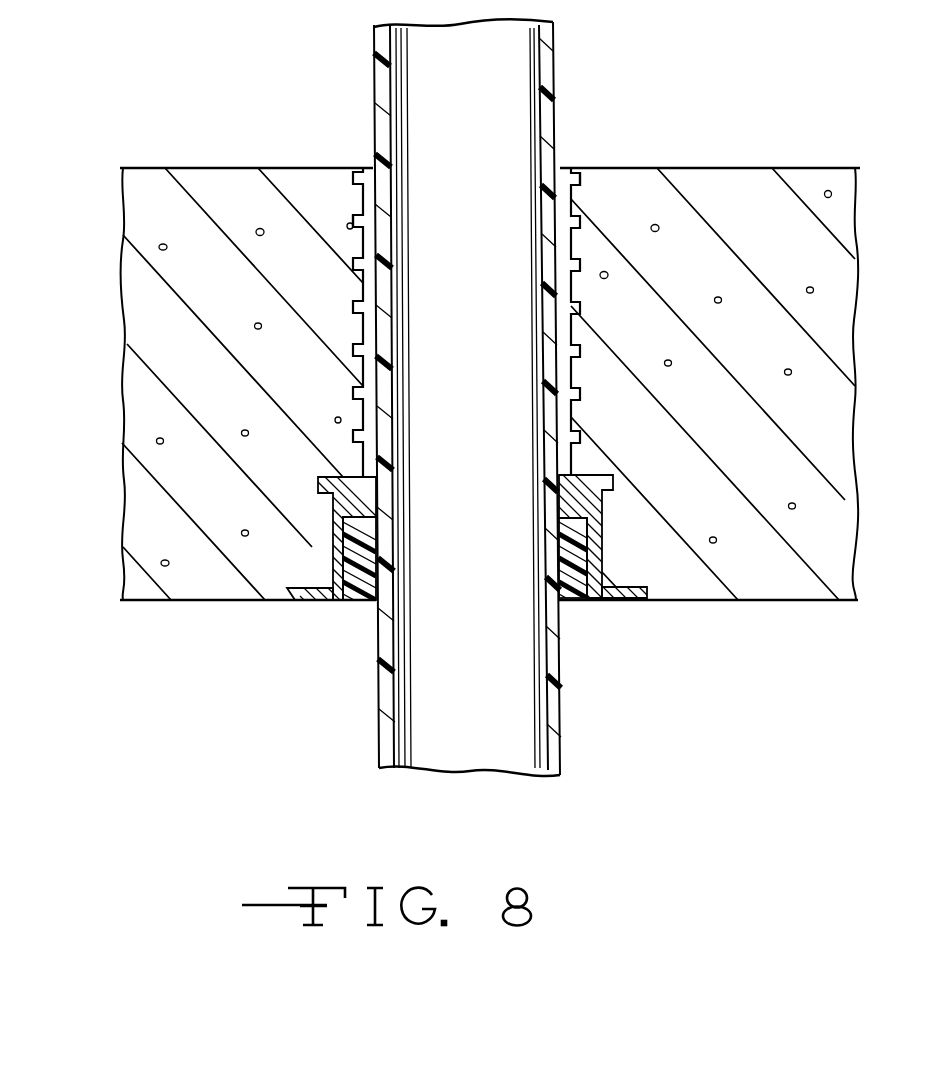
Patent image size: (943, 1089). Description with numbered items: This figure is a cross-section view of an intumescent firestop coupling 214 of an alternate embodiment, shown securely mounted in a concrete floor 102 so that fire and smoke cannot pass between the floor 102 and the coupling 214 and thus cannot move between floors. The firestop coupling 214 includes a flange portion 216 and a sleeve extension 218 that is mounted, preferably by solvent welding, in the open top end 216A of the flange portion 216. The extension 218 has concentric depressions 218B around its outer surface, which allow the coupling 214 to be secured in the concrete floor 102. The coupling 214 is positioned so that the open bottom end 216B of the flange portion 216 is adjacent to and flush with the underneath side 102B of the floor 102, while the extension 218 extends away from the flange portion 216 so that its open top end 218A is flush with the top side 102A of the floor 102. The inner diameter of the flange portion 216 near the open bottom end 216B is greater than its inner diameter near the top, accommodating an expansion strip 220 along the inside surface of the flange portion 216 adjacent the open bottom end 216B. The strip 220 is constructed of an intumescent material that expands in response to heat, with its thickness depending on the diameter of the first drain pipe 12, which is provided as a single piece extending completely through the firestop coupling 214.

The first drain pipe 12 is at (560, 727).
The floor 102 is at (137, 332).
The top side of the floor 102A is at (181, 162).
The underneath side of the floor 102B is at (205, 612).
The intumescent firestop coupling 214 is at (368, 428).
The flange portion 216 is at (333, 547).
The open top end of the flange portion 216A is at (572, 462).
The open bottom end of the flange portion 216B is at (369, 609).
The sleeve extension 218 is at (562, 163).
The open top end of the extension 218A is at (365, 160).
The concentric depressions 218B is at (580, 266).
The expansion strip 220 is at (577, 603).